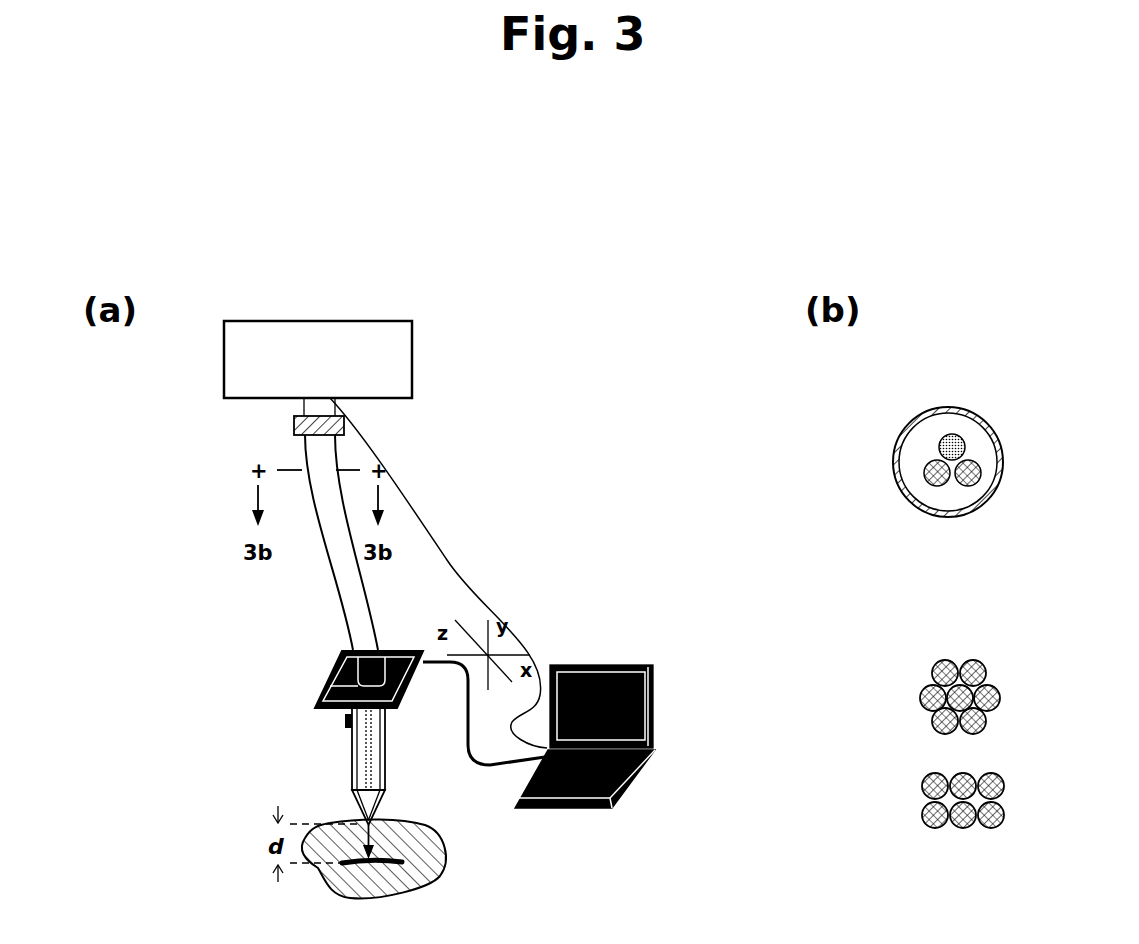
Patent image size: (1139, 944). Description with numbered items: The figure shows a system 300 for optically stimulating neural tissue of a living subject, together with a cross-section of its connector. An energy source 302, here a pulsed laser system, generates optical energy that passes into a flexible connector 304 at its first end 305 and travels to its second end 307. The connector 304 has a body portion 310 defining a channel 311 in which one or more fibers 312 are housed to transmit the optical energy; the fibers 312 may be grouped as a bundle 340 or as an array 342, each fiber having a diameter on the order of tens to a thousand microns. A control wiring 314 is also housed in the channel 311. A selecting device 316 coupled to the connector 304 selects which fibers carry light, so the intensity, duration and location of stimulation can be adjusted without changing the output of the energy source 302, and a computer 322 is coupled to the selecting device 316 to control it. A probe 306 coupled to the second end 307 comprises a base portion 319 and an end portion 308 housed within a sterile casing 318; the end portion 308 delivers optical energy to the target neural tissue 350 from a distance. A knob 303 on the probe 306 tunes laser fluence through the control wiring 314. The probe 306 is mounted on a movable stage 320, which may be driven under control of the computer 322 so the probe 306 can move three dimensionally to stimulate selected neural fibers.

In FIG. 3a, the laser treatment system 300 is at (349, 243).
In FIG. 3a, the energy source 302 is at (414, 358).
In FIG. 3a, the first end 305 is at (327, 398).
In FIG. 3a, the selecting device 316 is at (293, 425).
In FIG. 3a, the connector 304 is at (353, 591).
In FIG. 3a, the movable stage 320 is at (342, 650).
In FIG. 3a, the second end 307 is at (330, 686).
In FIG. 3a, the knob 303 is at (345, 720).
In FIG. 3a, the probe 306 is at (372, 740).
In FIG. 3a, the base portion 319 is at (352, 750).
In FIG. 3a, the casing 318 is at (386, 770).
In FIG. 3a, the end portion 308 is at (370, 826).
In FIG. 3a, the target neural tissue 350 is at (382, 862).
In FIG. 3a, the computer 322 is at (637, 777).
In FIG. 3b, the body portion 310 is at (1003, 470).
In FIG. 3b, the channel 311 is at (975, 447).
In FIG. 3b, the control wiring 314 is at (952, 440).
In FIG. 3b, the fibers 312 is at (968, 480).
In FIG. 3b, the bundle 340 is at (1010, 698).
In FIG. 3b, the array 342 is at (1010, 800).